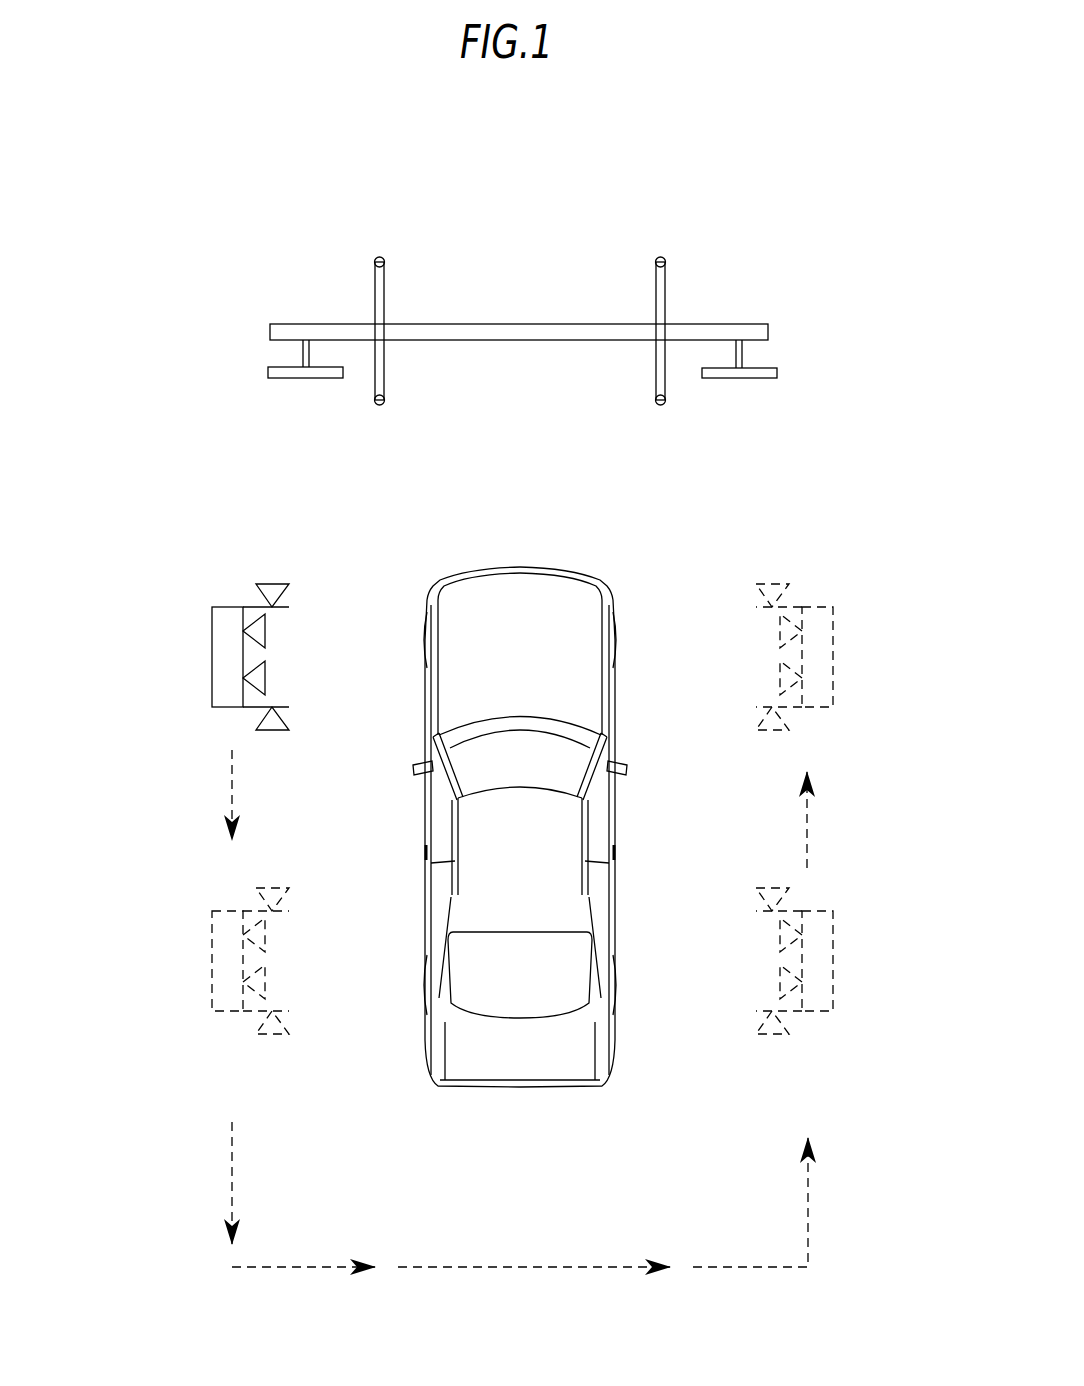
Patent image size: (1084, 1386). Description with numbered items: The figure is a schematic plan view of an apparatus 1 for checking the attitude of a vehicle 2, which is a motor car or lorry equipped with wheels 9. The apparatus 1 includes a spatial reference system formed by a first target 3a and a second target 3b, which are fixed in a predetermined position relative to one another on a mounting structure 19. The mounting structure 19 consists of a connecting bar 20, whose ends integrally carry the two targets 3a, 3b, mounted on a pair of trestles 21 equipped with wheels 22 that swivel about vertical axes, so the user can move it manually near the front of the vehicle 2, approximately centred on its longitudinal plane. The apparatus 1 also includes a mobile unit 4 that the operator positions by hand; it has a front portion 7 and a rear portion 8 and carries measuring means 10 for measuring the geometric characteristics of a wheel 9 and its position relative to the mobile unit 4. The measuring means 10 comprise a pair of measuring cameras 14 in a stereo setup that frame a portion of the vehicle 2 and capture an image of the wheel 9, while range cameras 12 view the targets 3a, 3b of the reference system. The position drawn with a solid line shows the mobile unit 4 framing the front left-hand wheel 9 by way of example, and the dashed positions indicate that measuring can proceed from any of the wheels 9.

The apparatus 1 is at (170, 541).
The vehicle 2 is at (515, 590).
The first target 3a is at (268, 372).
The second target 3b is at (777, 372).
The mobile unit 4 is at (210, 666).
The front portion 7 is at (270, 655).
The rear portion 8 is at (212, 622).
The wheel 9 is at (426, 655).
The measuring means 10 is at (278, 620).
The range camera 12 is at (277, 577).
The measuring camera 14 is at (268, 632).
The mounting structure 19 is at (527, 318).
The connecting bar 20 is at (440, 326).
The trestle 21 is at (378, 288).
The wheel 22 is at (383, 258).